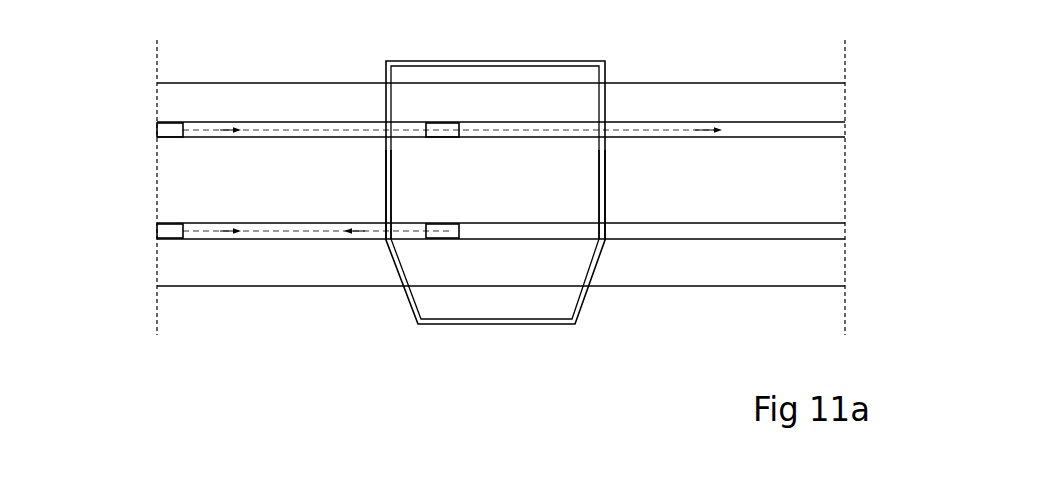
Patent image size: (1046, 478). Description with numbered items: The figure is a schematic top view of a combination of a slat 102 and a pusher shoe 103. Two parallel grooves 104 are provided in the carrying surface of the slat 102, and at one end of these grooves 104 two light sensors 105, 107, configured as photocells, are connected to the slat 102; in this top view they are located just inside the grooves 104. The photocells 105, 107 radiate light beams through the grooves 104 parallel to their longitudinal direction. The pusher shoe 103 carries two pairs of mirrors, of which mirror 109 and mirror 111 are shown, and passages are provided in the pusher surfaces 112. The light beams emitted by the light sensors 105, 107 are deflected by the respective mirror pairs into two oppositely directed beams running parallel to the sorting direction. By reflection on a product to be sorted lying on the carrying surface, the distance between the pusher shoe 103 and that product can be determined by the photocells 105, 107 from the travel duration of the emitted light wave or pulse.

The slat 102 is at (250, 273).
The pusher shoe 103 is at (578, 95).
The grooves 104 is at (790, 133).
The light sensor 105 is at (172, 137).
The light sensor 107 is at (170, 228).
The mirror 109 is at (455, 128).
The mirror 111 is at (449, 233).
The pusher surfaces 112 is at (388, 166).